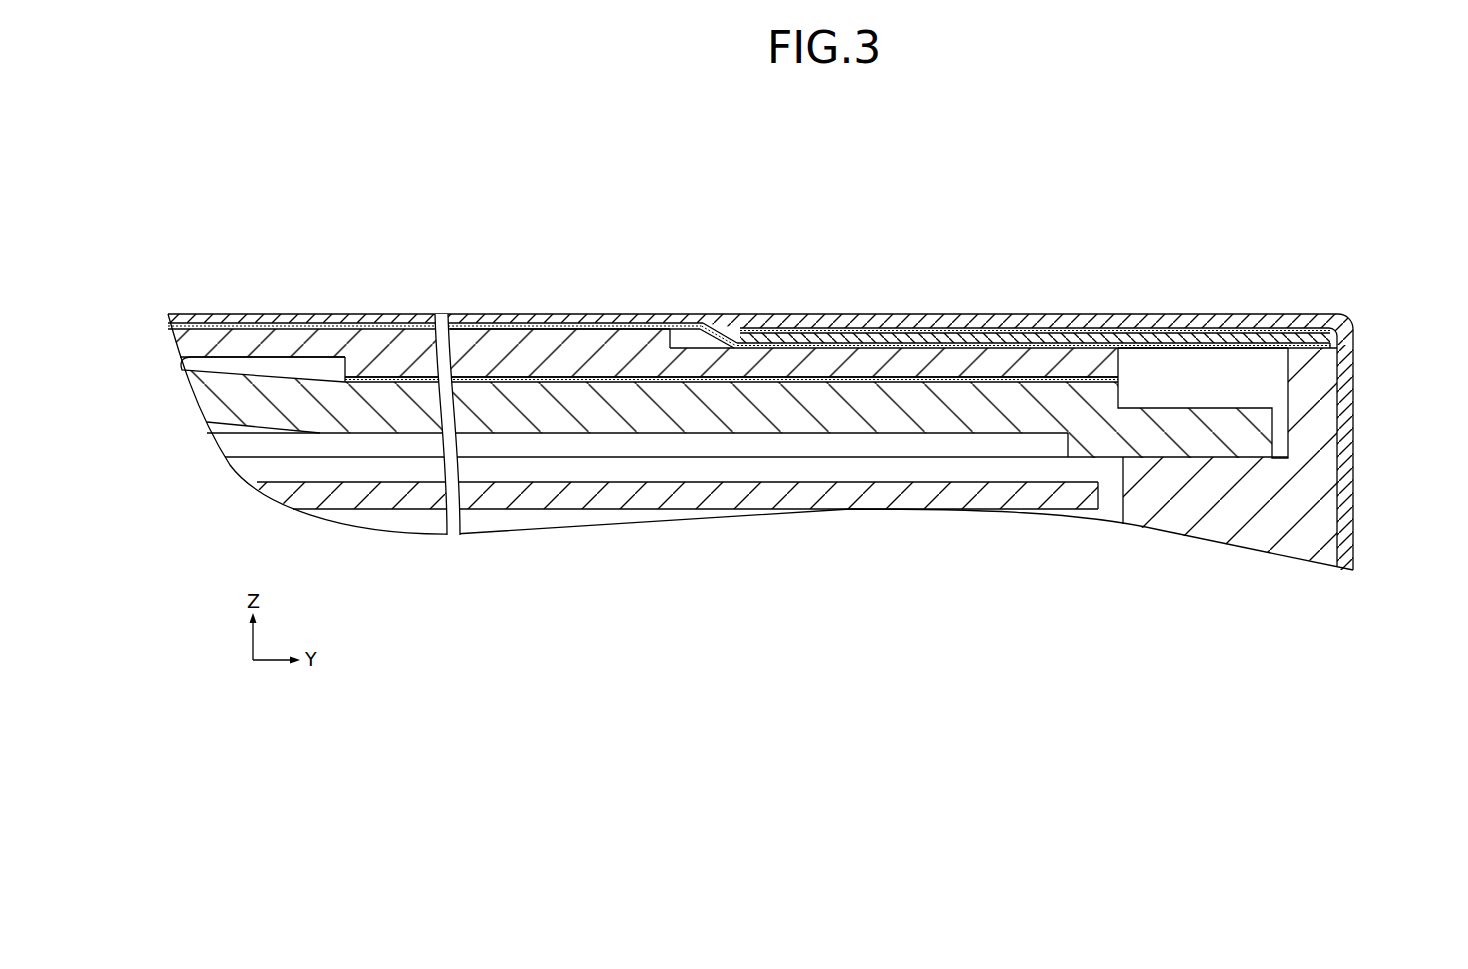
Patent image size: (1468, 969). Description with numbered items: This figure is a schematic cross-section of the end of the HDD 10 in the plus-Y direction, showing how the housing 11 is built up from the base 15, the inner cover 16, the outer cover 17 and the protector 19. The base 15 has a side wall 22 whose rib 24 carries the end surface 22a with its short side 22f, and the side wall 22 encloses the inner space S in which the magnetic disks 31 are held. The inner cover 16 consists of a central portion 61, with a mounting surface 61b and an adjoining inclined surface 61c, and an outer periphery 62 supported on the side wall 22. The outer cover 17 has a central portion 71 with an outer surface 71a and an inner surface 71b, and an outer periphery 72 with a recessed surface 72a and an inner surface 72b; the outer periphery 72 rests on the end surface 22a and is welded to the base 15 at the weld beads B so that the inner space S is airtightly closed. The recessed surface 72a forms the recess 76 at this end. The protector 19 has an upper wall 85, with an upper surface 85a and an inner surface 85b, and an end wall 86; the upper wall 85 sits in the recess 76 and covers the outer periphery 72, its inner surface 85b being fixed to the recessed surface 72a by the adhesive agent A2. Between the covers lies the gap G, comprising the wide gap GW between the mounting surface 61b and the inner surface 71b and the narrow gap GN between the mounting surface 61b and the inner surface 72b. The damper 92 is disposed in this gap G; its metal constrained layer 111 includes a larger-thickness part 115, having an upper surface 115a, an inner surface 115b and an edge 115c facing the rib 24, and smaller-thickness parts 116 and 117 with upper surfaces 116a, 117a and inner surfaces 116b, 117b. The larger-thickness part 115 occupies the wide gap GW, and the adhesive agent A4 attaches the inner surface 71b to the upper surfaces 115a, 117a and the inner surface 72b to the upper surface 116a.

The HDD 10 is at (290, 154).
The housing 11 is at (1358, 515).
The base 15 is at (1218, 530).
The inner cover 16 is at (210, 400).
The outer cover 17 is at (237, 327).
The protector 19 is at (1345, 410).
The side wall 22 is at (904, 459).
The end surface 22a is at (1318, 328).
The short side 22f is at (1326, 298).
The rib 24 is at (1323, 373).
The magnetic disks 31 is at (884, 495).
The central portion 61 is at (730, 434).
The mounting surface 61b is at (830, 375).
The inclined surface 61c is at (262, 340).
The outer periphery 62 is at (1258, 447).
The central portion 71 is at (760, 289).
The outer surface 71a is at (548, 330).
The inner surface 71b is at (569, 329).
The outer periphery 72 is at (1213, 335).
The recessed surface 72a is at (1193, 330).
The inner surface 72b is at (1240, 343).
The recess 76 is at (736, 312).
The upper wall 85 is at (1018, 328).
The upper surface 85a is at (1050, 332).
The inner surface 85b is at (991, 340).
The end wall 86 is at (1345, 457).
The damper 92 is at (473, 350).
The constrained layer 111 is at (645, 414).
The larger-thickness part 115 is at (645, 414).
The upper surface 115a is at (642, 335).
The inner surface 115b is at (583, 385).
The edge 115c is at (668, 340).
The smaller-thickness part 116 is at (876, 340).
The upper surface 116a is at (1100, 340).
The inner surface 116b is at (1002, 378).
The smaller-thickness part 117 is at (200, 340).
The upper surface 117a is at (330, 325).
The inner surface 117b is at (188, 370).
The adhesive agent A2 is at (907, 330).
The adhesive agent A4 is at (303, 325).
The weld beads B is at (1335, 325).
The gap G is at (701, 326).
The wide gap GW is at (752, 280).
The narrow gap GN is at (1130, 361).
The inner space S is at (251, 473).